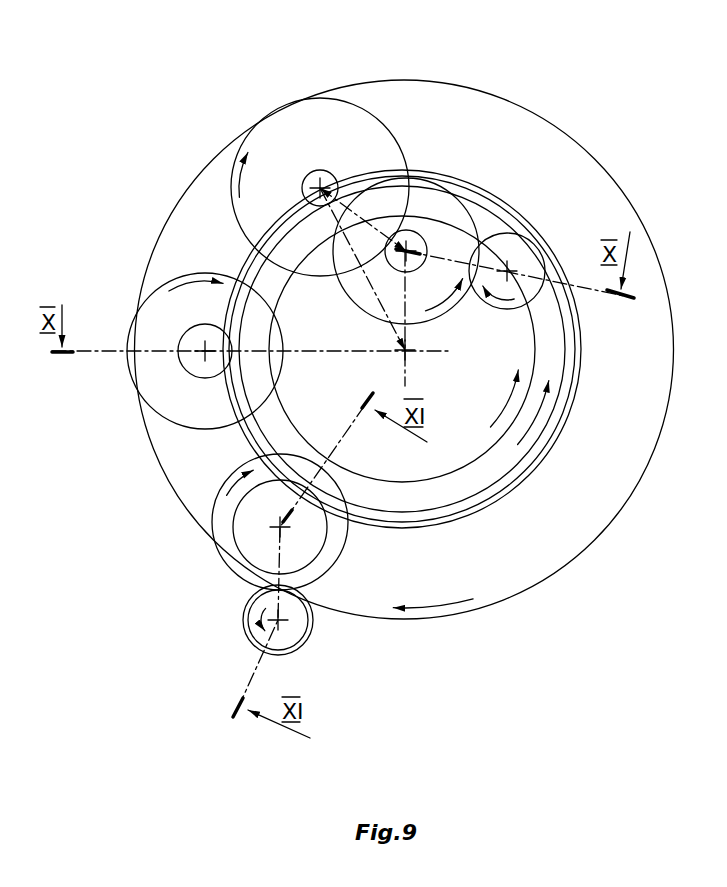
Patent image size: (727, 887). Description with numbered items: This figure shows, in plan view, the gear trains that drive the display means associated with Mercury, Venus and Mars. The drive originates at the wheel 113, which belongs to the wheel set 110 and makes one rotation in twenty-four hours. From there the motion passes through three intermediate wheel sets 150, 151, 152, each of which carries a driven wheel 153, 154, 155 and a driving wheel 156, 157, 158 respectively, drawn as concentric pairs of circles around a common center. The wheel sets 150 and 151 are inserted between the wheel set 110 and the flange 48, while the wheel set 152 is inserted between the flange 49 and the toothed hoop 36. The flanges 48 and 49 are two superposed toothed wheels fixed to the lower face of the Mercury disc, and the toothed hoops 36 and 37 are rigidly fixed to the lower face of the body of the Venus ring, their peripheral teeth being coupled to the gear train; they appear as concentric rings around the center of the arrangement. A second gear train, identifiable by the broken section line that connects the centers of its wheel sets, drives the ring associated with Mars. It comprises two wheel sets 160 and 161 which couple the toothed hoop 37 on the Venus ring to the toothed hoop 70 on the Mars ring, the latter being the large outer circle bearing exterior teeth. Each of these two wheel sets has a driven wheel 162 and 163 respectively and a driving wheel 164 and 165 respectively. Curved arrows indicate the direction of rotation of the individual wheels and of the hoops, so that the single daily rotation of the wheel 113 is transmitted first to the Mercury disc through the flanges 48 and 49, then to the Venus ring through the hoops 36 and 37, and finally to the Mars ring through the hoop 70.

The hoop 36 is at (580, 378).
The hoop 37 is at (565, 415).
The flange 48 is at (538, 443).
The flange 49 is at (483, 458).
The hoop 70 is at (533, 585).
The wheel set 110 is at (488, 313).
The wheel 113 is at (510, 242).
The intermediate wheel set 150 is at (438, 163).
The intermediate wheel set 151 is at (264, 104).
The intermediate wheel set 152 is at (158, 268).
The driven wheel 153 is at (467, 217).
The driven wheel 154 is at (337, 105).
The driven wheel 155 is at (158, 293).
The driving wheel 156 is at (415, 235).
The driving wheel 157 is at (306, 174).
The driving wheel 158 is at (190, 372).
The wheel set 160 is at (215, 570).
The wheel set 161 is at (240, 635).
The driven wheel 162 is at (243, 538).
The driven wheel 163 is at (290, 653).
The driving wheel 164 is at (217, 503).
The driving wheel 165 is at (310, 630).